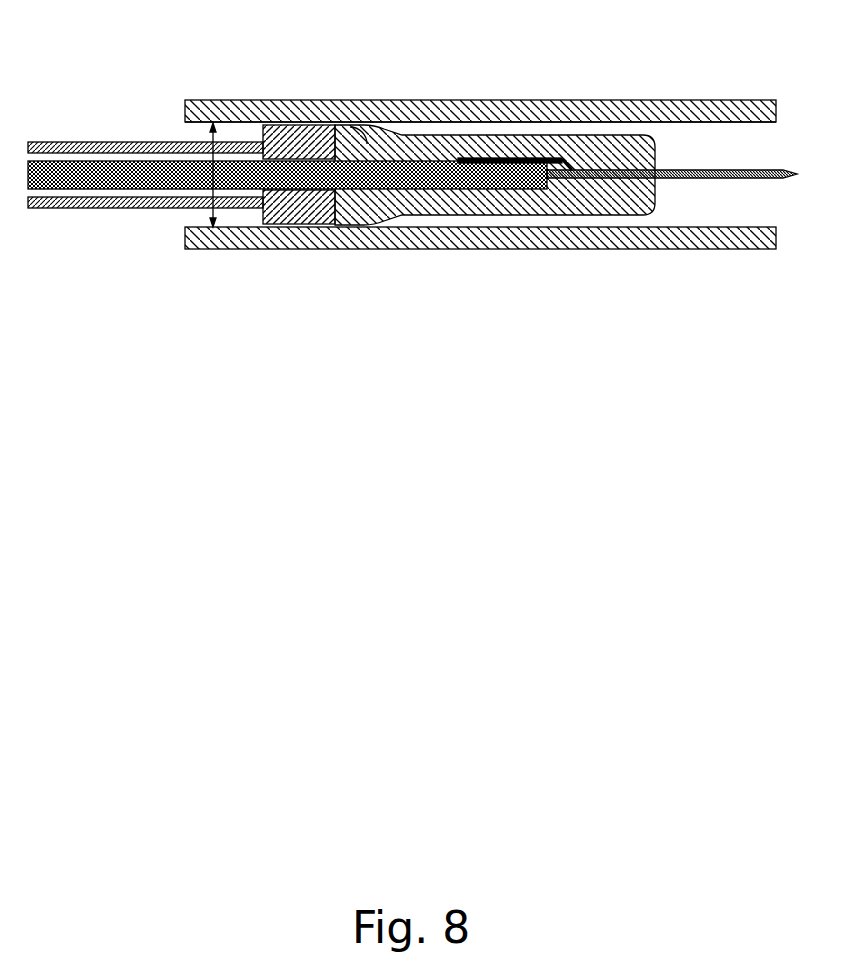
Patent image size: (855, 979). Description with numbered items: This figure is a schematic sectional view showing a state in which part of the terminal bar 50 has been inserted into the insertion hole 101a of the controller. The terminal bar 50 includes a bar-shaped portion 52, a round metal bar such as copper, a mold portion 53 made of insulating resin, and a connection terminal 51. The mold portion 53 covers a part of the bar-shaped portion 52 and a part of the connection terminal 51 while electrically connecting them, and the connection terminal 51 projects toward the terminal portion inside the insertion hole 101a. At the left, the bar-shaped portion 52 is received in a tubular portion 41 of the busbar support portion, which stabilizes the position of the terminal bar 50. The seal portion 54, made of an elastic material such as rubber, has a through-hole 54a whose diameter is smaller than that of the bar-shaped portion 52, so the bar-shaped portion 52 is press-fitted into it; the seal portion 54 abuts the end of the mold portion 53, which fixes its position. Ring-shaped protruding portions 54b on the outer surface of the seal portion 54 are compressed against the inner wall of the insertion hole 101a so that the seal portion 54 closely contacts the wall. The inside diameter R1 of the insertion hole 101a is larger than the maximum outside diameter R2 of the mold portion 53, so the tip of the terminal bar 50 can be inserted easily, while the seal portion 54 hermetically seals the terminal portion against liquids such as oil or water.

The terminal bar 50 is at (655, 139).
The insertion hole 101a is at (197, 124).
The tubular portion 41 is at (82, 210).
The bar-shaped portion 52 is at (110, 163).
The mold portion 53 is at (495, 136).
The seal portion 54 is at (286, 186).
The through-hole 54a is at (278, 124).
The protruding portion 54b is at (296, 224).
The connection terminal 51 is at (708, 180).
The inside diameter of the insertion hole R1 is at (181, 193).
The maximum outside diameter of the mold portion R2 is at (370, 126).